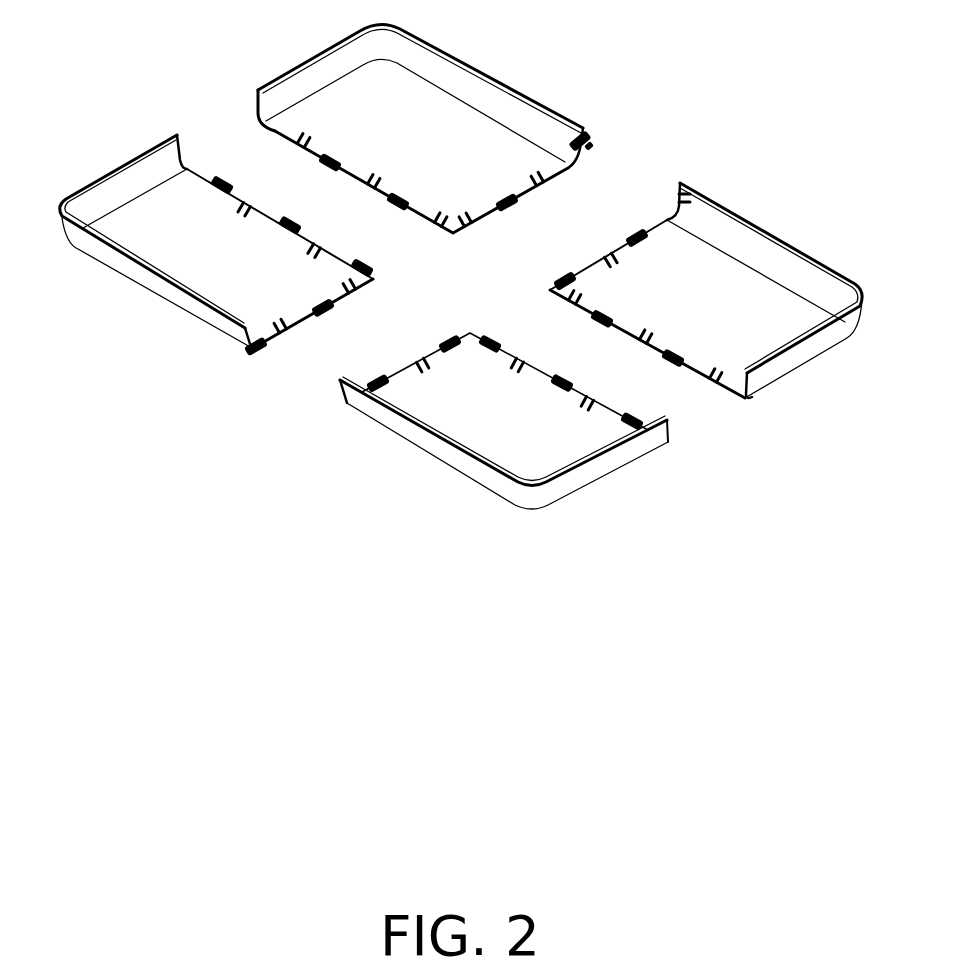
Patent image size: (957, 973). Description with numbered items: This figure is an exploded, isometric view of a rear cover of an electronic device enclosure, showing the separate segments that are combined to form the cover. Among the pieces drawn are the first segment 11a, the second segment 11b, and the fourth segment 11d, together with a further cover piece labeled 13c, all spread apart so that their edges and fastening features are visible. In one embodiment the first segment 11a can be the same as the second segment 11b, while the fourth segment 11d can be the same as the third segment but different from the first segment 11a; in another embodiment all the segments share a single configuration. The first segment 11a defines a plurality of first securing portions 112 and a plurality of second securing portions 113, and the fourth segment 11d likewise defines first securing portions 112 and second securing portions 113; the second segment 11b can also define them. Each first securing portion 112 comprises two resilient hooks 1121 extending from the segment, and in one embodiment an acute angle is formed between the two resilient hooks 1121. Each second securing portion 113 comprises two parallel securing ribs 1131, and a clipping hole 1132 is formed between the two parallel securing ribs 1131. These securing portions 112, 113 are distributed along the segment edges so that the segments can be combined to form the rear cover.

The first segment 11a is at (478, 130).
The second segment 11b is at (470, 433).
The fourth segment 11d is at (202, 278).
The third cover plate 13c is at (722, 275).
The first securing portion 112 is at (215, 180).
The resilient hook 1121 is at (590, 143).
The second securing portion 113 is at (297, 133).
The securing rib 1131 is at (300, 135).
The clipping hole 1132 is at (313, 250).